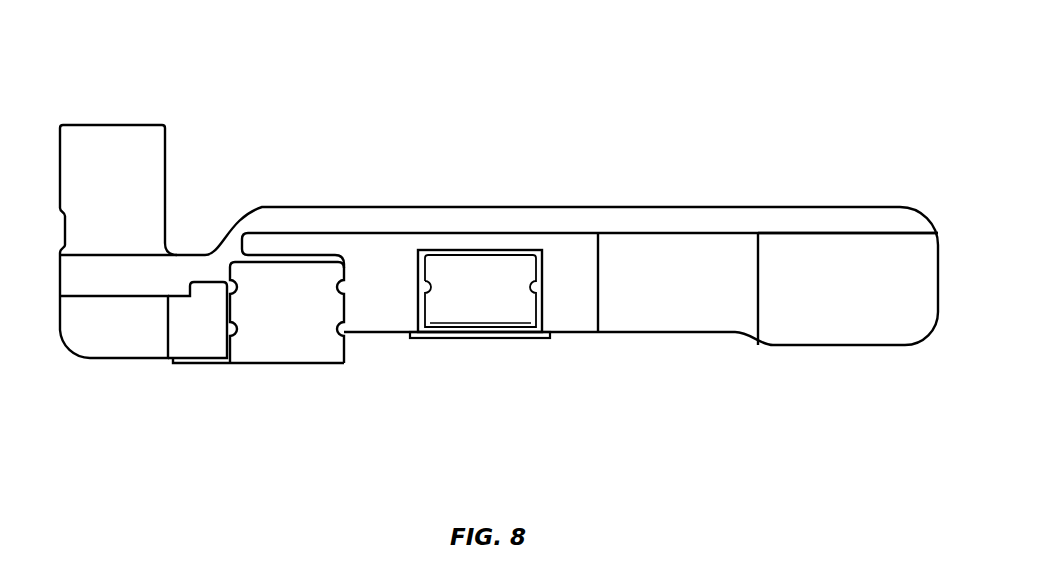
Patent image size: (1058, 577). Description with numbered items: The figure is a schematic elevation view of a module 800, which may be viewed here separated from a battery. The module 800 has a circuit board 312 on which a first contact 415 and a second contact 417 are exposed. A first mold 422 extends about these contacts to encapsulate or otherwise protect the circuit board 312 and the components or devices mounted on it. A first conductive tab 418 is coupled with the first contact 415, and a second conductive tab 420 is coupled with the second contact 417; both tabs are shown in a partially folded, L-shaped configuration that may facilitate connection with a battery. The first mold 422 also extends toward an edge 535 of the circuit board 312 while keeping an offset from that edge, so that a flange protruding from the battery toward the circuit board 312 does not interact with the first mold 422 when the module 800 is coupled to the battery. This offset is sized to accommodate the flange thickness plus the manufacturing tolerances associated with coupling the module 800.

The module 800 is at (242, 105).
The edge of circuit board 535 is at (442, 207).
The circuit board 312 is at (680, 212).
The first mold 422 is at (815, 237).
The second contact 417 is at (338, 257).
The first contact 415 is at (535, 252).
The first conductive tab 418 is at (542, 335).
The second conductive tab 420 is at (343, 353).